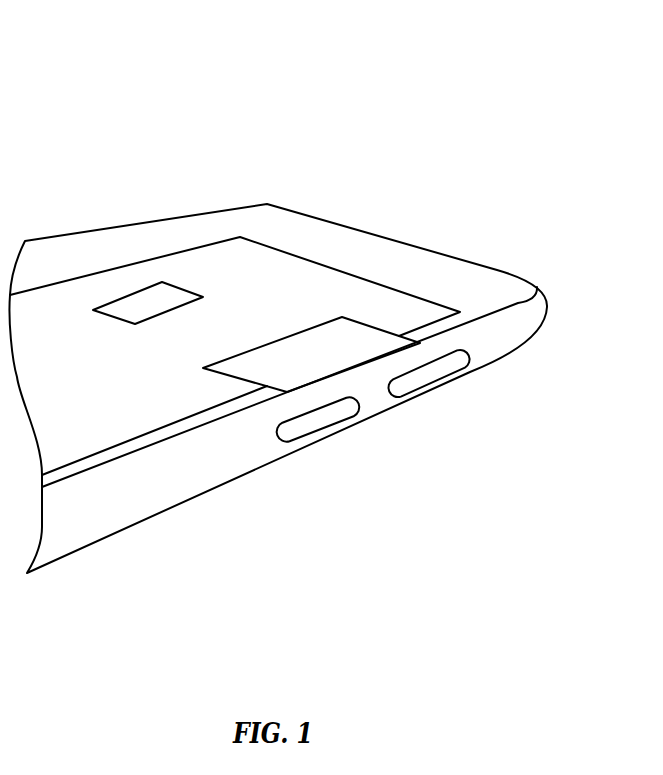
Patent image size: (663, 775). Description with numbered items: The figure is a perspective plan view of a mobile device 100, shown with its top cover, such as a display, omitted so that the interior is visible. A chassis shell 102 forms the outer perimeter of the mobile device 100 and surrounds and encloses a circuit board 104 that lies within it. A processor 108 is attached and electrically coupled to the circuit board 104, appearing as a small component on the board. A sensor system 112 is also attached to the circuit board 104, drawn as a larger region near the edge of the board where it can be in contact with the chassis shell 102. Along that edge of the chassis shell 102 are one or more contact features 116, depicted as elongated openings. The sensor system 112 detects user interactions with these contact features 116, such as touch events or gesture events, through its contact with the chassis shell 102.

The mobile device 100 is at (416, 66).
The chassis shell 102 is at (516, 323).
The circuit board 104 is at (263, 268).
The processor 108 is at (138, 310).
The sensor system 112 is at (340, 342).
The contact features 116 is at (322, 433).